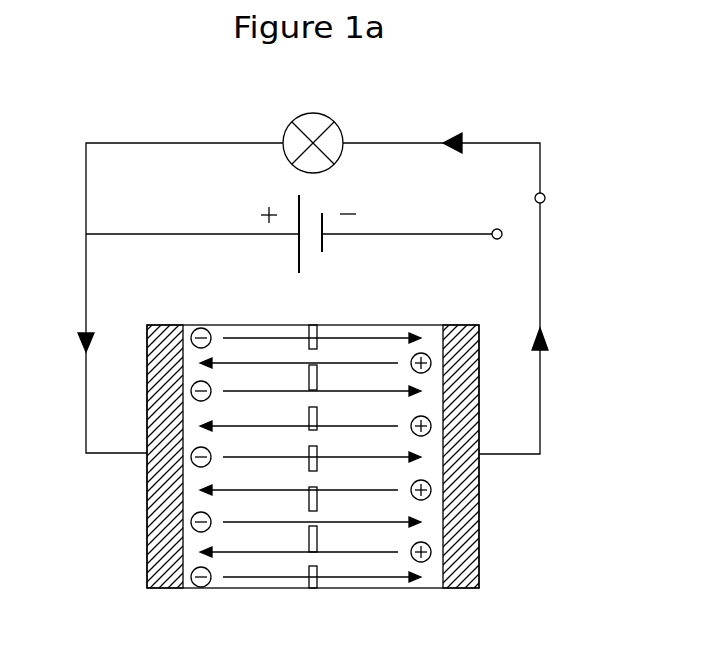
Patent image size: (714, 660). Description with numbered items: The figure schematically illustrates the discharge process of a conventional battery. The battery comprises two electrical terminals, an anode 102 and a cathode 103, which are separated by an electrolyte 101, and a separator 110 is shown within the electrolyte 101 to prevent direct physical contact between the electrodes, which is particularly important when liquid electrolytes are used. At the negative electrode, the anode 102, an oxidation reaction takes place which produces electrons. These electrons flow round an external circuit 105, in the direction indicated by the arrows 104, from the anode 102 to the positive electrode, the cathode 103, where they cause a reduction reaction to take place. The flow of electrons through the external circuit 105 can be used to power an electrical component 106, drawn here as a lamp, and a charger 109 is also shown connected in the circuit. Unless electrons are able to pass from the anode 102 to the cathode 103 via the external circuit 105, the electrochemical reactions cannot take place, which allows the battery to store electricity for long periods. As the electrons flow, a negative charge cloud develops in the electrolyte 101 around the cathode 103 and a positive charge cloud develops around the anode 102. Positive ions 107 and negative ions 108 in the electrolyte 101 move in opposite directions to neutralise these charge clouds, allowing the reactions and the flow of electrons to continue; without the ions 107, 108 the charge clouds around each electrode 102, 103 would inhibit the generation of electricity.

The electrolyte 101 is at (268, 567).
The anode 102 is at (468, 540).
The cathode 103 is at (157, 547).
The arrows 104 is at (453, 133).
The external circuit 105 is at (143, 142).
The electrical component 106 is at (295, 138).
The positive ions 107 is at (428, 556).
The negative ions 108 is at (197, 584).
The charger 109 is at (352, 256).
The separator 110 is at (315, 583).